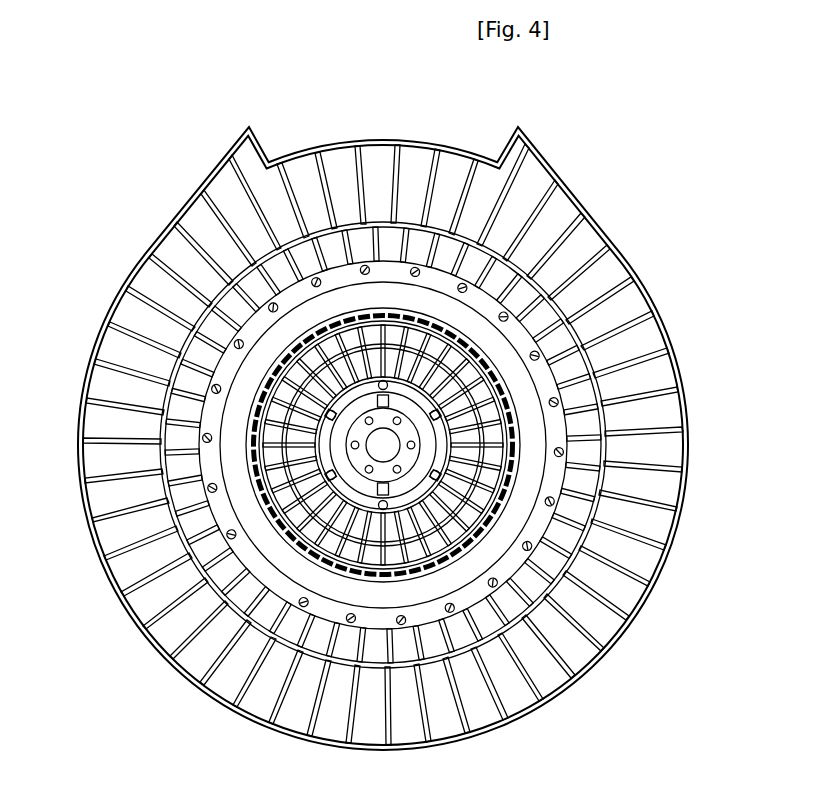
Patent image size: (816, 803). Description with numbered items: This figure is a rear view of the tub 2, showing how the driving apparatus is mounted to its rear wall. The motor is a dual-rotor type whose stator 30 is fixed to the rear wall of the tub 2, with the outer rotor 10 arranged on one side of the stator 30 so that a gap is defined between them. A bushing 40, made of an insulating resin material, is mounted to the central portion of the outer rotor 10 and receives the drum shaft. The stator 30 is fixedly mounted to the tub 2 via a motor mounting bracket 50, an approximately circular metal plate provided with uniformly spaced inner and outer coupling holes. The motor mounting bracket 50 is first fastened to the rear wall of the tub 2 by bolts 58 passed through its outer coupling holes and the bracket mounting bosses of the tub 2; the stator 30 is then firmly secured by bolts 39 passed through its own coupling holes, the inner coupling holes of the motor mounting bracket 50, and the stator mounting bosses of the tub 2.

The tub 2 is at (592, 205).
The bolts 58 is at (137, 282).
The motor mounting bracket 50 is at (400, 302).
The outer rotor 10 is at (418, 585).
The stator 30 is at (350, 543).
The bolts 39 is at (320, 457).
The bushing 40 is at (413, 428).